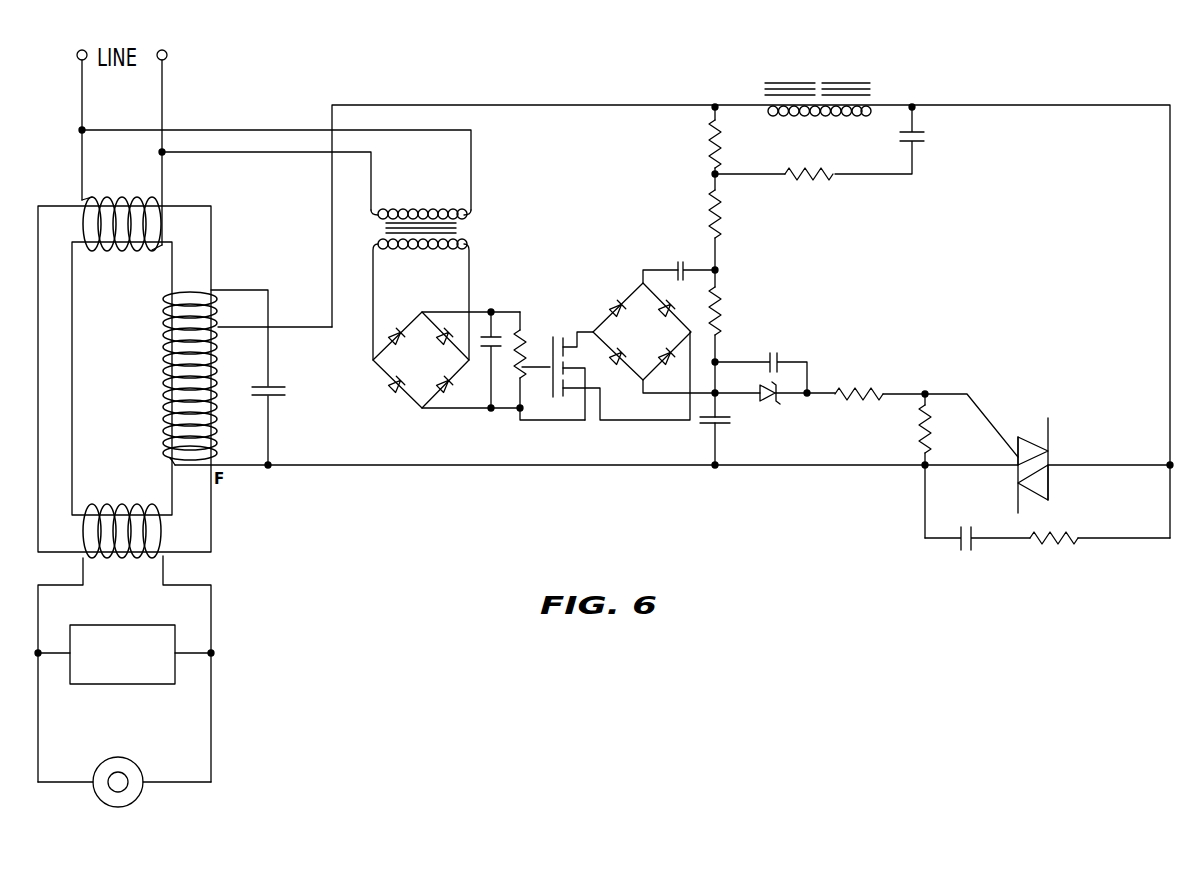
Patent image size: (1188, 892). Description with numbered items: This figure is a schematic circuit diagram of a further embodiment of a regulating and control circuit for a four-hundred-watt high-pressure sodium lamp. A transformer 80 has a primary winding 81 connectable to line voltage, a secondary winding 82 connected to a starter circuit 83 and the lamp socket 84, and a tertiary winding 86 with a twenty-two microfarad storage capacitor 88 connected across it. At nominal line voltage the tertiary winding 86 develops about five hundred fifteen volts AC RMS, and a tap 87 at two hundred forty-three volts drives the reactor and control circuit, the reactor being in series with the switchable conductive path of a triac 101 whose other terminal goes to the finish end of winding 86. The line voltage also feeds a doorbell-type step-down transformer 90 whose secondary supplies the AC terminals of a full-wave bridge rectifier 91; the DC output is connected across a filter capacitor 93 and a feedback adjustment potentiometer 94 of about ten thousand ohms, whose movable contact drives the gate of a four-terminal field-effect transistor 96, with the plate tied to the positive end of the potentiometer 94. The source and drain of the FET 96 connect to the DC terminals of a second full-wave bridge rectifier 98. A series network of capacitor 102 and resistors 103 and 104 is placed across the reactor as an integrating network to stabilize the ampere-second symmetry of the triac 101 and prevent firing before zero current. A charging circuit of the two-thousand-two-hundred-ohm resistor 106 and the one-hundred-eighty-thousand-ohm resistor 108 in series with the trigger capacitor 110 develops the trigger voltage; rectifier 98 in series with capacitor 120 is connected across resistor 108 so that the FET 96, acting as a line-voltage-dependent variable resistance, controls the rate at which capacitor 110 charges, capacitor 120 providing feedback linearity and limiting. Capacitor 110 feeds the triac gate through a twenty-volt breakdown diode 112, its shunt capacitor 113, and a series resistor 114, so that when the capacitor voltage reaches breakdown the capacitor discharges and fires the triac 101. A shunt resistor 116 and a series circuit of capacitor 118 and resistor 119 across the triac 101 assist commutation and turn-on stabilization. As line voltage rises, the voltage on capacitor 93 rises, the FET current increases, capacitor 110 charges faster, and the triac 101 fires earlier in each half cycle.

The transformer 80 is at (42, 192).
The primary winding 81 is at (118, 252).
The secondary winding 82 is at (118, 500).
The starter circuit 83 is at (155, 686).
The lamp socket 84 is at (135, 802).
The tertiary winding 86 is at (164, 336).
The tap 87 is at (220, 327).
The storage capacitor 88 is at (271, 388).
The step-down transformer 90 is at (466, 228).
The full-wave bridge rectifier 91 is at (372, 362).
The filter capacitor 93 is at (497, 334).
The feedback adjustment potentiometer 94 is at (525, 330).
The field-effect transistor 96 is at (561, 407).
The bridge rectifier 98 is at (606, 288).
The triac 101 is at (1050, 447).
The capacitor 102 is at (921, 146).
The resistor 103 is at (826, 180).
The resistor 104 is at (712, 138).
The resistor 106 is at (721, 216).
The resistor 108 is at (721, 318).
The trigger capacitor 110 is at (708, 426).
The breakdown diode 112 is at (772, 404).
The shunt capacitor 113 is at (778, 352).
The series resistor 114 is at (872, 392).
The shunt resistor 116 is at (918, 414).
The capacitor 118 is at (962, 555).
The resistor 119 is at (1068, 546).
The capacitor 120 is at (678, 265).